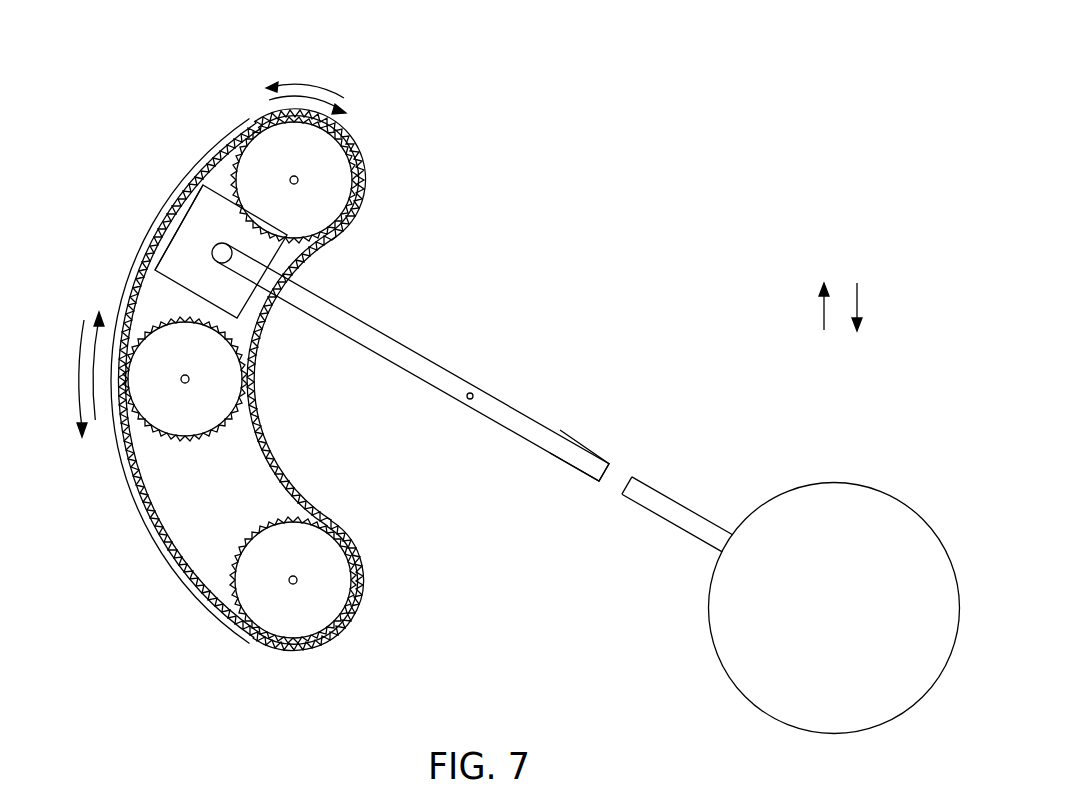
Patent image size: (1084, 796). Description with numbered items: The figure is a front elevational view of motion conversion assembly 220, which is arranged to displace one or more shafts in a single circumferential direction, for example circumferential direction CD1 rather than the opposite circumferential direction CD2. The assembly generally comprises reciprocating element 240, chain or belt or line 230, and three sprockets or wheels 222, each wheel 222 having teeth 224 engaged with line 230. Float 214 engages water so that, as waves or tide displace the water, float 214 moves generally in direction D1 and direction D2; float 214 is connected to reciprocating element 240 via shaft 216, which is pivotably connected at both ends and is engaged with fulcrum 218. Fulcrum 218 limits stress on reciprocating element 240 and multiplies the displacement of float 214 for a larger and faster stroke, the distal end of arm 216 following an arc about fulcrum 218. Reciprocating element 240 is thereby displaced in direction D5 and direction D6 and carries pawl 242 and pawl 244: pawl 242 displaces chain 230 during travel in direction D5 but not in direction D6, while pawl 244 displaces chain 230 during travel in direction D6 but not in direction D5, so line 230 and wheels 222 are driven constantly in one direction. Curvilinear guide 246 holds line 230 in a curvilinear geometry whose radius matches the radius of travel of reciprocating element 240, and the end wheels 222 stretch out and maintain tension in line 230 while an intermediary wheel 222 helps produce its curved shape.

The float 214 is at (826, 492).
The shaft 216 is at (578, 450).
The fulcrum 218 is at (472, 393).
The motion conversion assembly 220 is at (168, 76).
The wheel 222 is at (337, 171).
The teeth 224 is at (313, 233).
The chain or belt or line 230 is at (262, 118).
The reciprocating element 240 is at (168, 202).
The pawl 242 is at (203, 220).
The pawl 244 is at (290, 238).
The curvilinear guide 246 is at (148, 534).
The circumferential direction CD1 is at (320, 100).
The circumferential direction CD2 is at (300, 84).
The direction D1 is at (818, 313).
The direction D2 is at (864, 292).
The direction D5 is at (86, 427).
The direction D6 is at (74, 388).